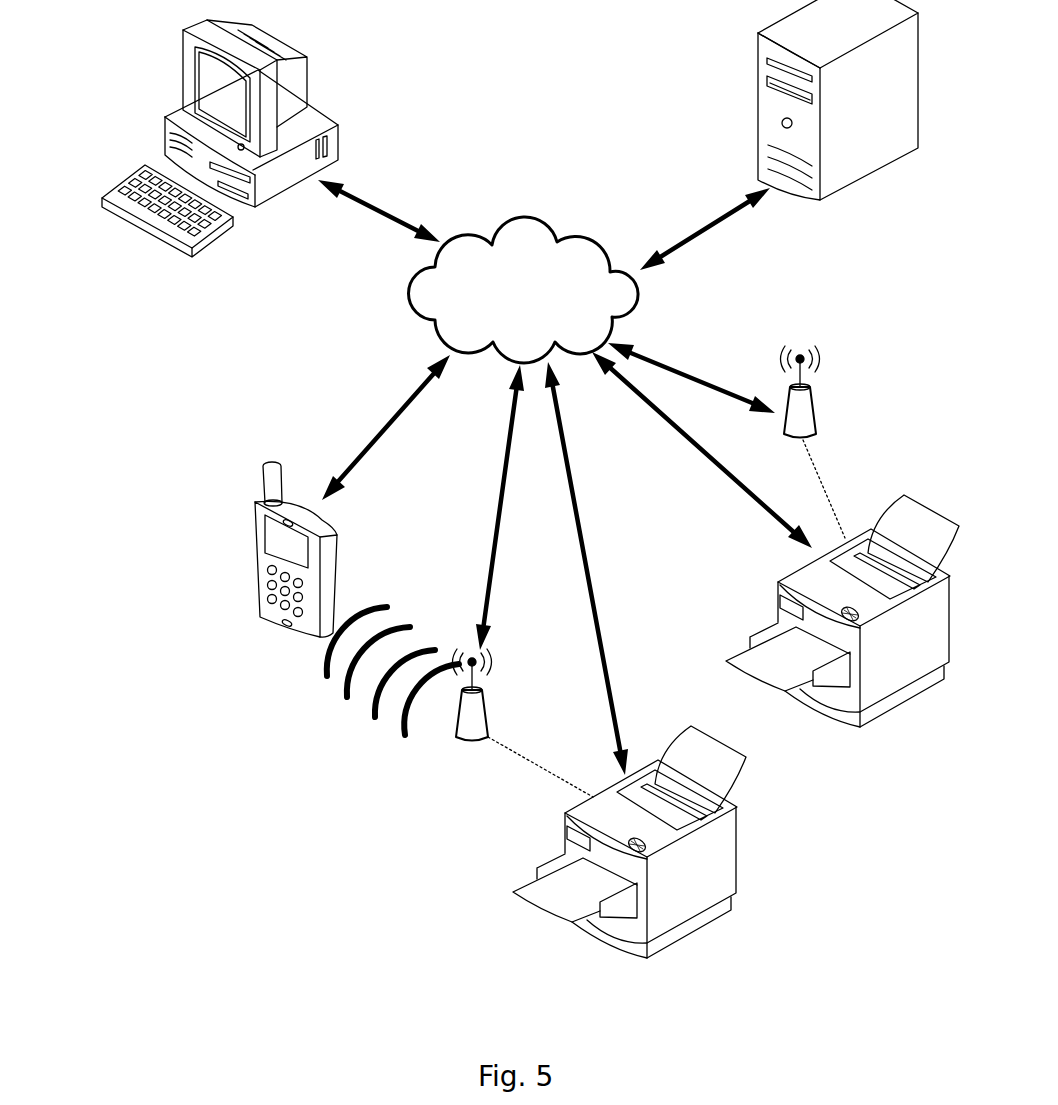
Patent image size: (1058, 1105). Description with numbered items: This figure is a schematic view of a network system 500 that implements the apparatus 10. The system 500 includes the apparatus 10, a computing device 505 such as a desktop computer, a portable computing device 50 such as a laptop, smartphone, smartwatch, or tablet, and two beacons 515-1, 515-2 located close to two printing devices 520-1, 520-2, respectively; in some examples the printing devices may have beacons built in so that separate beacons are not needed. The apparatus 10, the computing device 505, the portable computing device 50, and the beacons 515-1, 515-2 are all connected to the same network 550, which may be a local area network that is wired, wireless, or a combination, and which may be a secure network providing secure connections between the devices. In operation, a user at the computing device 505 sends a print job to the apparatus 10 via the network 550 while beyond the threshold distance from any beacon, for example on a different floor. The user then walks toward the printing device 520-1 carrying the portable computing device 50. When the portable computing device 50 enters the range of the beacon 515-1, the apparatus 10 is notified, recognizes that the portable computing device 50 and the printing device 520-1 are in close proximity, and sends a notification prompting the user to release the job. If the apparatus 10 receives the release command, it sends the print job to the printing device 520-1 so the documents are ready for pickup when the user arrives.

The computing device 505 is at (168, 114).
The apparatus 10 is at (758, 93).
The network 550 is at (545, 302).
The portable computing device 50 is at (255, 589).
The beacon 515-1 is at (474, 740).
The beacon 515-2 is at (817, 413).
The printing device 520-1 is at (742, 838).
The printing device 520-2 is at (783, 575).
The network system 500 is at (232, 752).